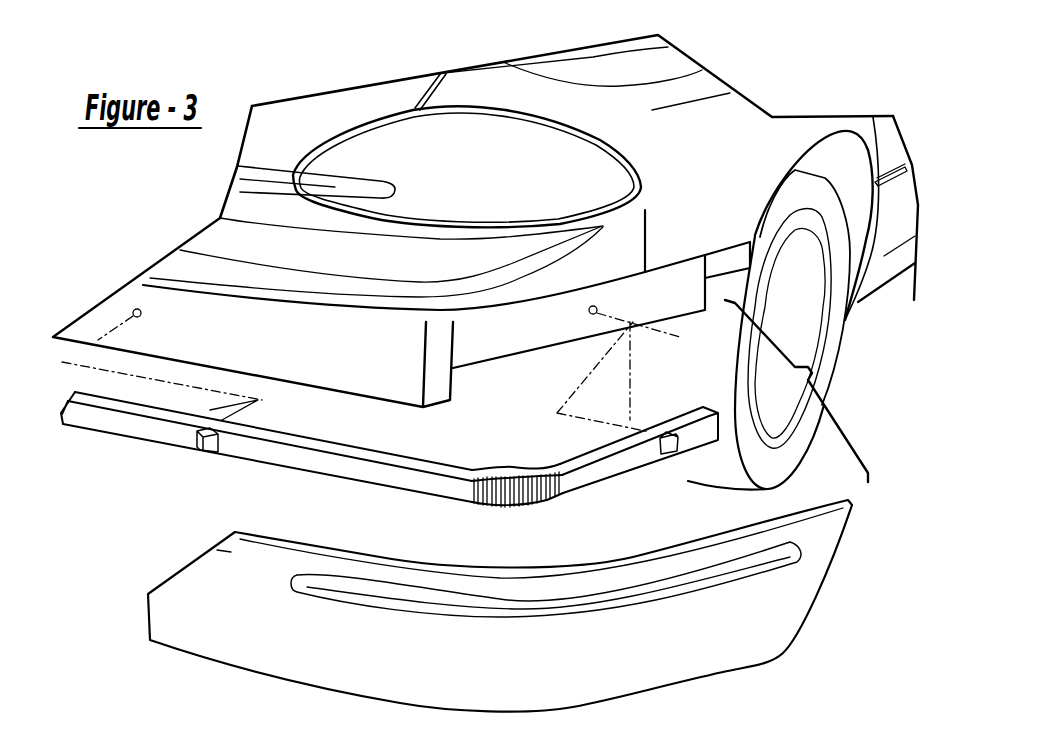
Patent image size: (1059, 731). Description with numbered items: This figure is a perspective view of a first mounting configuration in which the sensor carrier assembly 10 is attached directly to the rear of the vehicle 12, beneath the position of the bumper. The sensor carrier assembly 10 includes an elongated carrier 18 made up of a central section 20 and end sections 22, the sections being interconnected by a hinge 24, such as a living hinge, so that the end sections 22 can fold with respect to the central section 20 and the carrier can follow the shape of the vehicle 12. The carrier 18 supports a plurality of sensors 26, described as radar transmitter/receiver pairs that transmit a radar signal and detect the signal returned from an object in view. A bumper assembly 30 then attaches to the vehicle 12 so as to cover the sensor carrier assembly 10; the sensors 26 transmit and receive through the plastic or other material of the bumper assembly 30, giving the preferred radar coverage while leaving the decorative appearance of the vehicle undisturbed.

The sensor carrier assembly 10 is at (385, 400).
The vehicle 12 is at (280, 96).
The carrier 18 is at (75, 424).
The central section 20 is at (152, 431).
The end sections 22 is at (592, 473).
The hinge 24 is at (520, 504).
The sensors 26 is at (205, 450).
The bumper assembly 30 is at (244, 617).